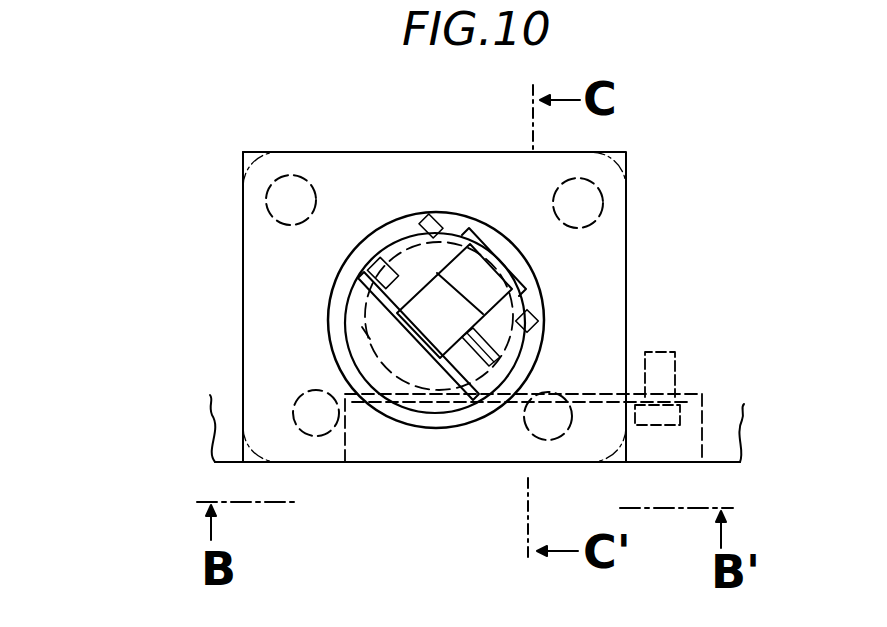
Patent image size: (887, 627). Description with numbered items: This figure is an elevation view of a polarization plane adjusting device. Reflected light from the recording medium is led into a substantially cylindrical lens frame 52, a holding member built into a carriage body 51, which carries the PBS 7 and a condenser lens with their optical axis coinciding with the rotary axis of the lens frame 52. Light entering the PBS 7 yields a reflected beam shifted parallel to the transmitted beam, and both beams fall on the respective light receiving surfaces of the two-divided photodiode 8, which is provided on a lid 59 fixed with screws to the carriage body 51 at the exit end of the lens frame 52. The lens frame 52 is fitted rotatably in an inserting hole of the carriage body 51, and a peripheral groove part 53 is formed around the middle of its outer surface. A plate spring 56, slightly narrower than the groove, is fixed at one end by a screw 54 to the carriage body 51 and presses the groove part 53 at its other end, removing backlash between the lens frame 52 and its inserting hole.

The PBS 7 is at (497, 240).
The two-divided photodiode 8 is at (392, 280).
The carriage body 51 is at (660, 303).
The lens frame 52 is at (350, 303).
The peripheral groove part 53 is at (365, 333).
The screw 54 is at (663, 352).
The plate spring 56 is at (417, 403).
The lid 59 is at (593, 250).